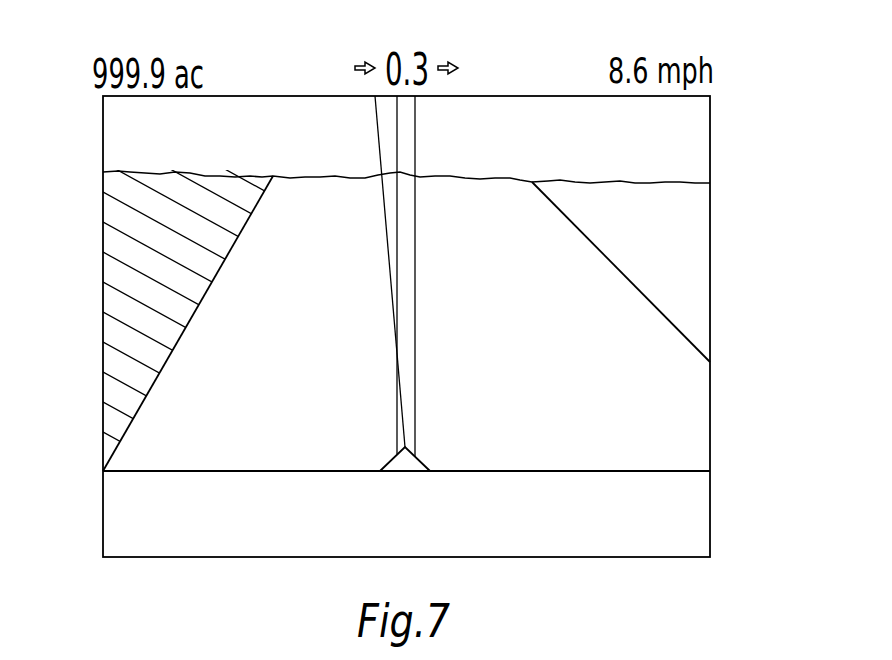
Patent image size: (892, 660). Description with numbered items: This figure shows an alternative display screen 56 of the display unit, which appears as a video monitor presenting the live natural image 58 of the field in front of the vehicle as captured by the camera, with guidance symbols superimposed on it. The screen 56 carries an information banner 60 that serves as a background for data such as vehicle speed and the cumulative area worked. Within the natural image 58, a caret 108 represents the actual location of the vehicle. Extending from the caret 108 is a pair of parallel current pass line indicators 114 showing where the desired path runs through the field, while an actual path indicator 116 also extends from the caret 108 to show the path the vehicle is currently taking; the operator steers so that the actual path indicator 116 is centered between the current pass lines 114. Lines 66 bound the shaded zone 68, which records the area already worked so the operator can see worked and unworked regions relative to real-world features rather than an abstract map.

The screen 56 is at (710, 298).
The natural image 58 is at (690, 213).
The information banner 60 is at (688, 506).
The field boundary line 66 is at (199, 300).
The shaded zone 68 is at (125, 250).
The caret 108 is at (425, 461).
The current pass line indicators 114 is at (398, 125).
The actual path indicator 116 is at (381, 158).